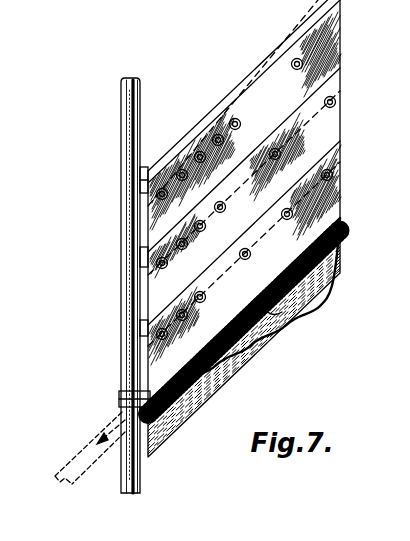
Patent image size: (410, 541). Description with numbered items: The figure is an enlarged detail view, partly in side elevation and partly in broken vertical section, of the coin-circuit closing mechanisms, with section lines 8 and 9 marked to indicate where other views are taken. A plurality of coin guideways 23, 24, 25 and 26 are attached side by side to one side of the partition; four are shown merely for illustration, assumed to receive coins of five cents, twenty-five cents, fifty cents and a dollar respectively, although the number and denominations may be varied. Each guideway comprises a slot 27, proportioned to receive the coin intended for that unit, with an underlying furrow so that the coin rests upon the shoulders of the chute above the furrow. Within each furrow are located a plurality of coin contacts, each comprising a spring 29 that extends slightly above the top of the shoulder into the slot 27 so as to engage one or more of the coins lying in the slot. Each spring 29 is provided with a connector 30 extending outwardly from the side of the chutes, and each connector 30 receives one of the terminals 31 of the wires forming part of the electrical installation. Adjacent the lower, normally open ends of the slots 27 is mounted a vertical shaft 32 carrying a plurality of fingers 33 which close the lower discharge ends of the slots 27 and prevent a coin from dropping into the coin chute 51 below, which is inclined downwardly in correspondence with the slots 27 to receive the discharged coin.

The section line 8 is at (360, 149).
The section line 9 is at (385, 196).
The coin guideway 23 is at (340, 262).
The coin guideway 24 is at (340, 183).
The coin guideway 25 is at (340, 115).
The coin guideway 26 is at (340, 49).
The slot 27 is at (340, 223).
The spring 29 is at (271, 306).
The connector 30 is at (284, 88).
The terminal 31 is at (224, 139).
The vertical shaft 32 is at (125, 302).
The finger 33 is at (143, 255).
The coin chute 51 is at (92, 460).